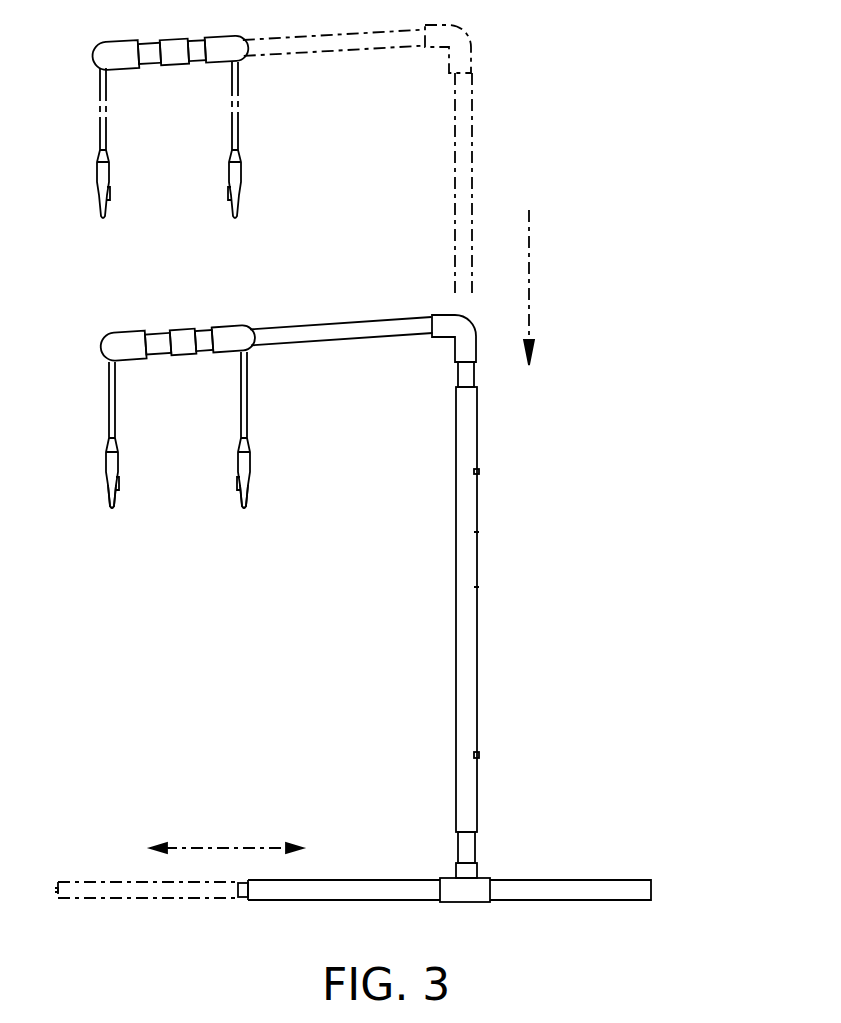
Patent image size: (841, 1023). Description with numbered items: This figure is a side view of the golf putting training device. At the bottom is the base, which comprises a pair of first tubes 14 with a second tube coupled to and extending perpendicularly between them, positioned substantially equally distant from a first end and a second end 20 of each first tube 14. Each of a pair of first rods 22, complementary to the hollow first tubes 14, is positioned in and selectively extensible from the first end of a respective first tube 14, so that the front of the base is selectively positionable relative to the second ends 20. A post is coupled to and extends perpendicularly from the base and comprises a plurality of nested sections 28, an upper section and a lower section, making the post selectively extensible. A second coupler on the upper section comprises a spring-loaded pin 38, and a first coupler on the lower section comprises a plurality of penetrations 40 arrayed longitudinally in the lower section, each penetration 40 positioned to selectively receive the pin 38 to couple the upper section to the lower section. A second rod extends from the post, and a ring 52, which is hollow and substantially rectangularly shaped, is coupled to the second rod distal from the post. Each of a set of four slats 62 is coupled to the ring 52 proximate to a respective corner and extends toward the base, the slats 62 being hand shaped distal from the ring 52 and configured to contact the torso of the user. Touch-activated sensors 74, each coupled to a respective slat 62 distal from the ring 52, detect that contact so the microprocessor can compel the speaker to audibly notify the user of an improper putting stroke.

The first tube 14 is at (283, 895).
The second end 20 is at (651, 892).
The first rod 22 is at (243, 900).
The nested sections 28 is at (460, 615).
The pin 38 is at (476, 472).
The penetrations 40 is at (477, 532).
The ring 52 is at (157, 345).
The slats 62 is at (118, 457).
The sensors 74 is at (115, 492).